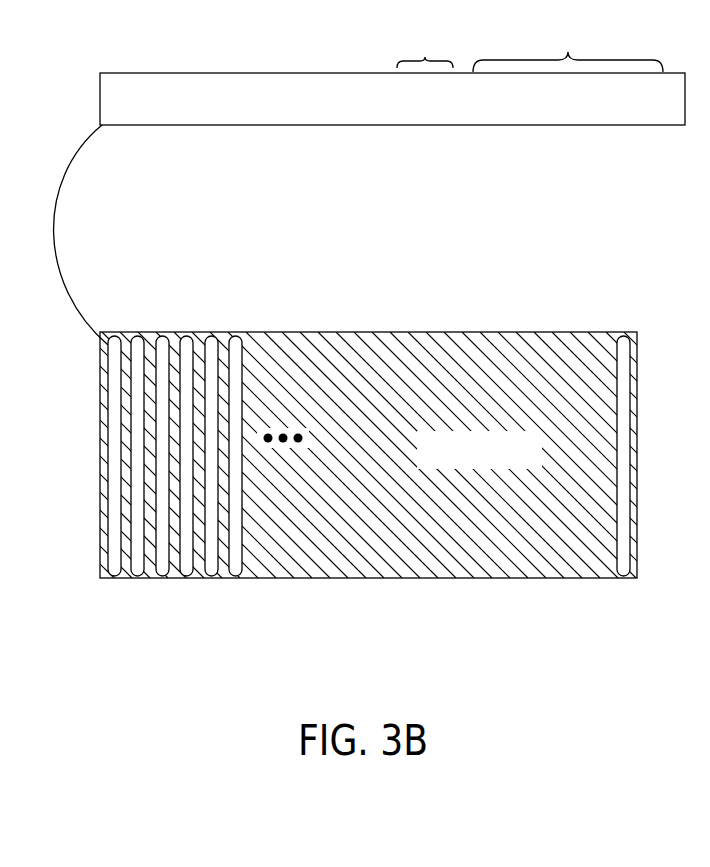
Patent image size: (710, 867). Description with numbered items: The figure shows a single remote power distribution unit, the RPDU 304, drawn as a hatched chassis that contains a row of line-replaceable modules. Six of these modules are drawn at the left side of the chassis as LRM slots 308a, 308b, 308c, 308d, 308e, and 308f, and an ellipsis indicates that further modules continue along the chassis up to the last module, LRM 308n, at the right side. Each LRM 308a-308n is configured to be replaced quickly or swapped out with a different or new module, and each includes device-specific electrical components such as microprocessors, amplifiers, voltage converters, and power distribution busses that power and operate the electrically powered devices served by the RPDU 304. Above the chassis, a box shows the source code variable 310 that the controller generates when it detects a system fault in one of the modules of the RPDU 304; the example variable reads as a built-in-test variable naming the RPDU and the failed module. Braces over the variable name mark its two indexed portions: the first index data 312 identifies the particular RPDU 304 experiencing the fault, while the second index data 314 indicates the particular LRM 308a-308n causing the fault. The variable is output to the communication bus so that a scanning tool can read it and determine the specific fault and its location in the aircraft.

The RPDU 304 is at (442, 316).
The line-replaceable module 308a is at (112, 340).
The line-replaceable module 308b is at (138, 577).
The line-replaceable module 308c is at (165, 342).
The line-replaceable module 308d is at (192, 577).
The line-replaceable module 308e is at (216, 342).
The line-replaceable module 308f is at (239, 577).
The line-replaceable module 308n is at (622, 577).
The source code variable 310 is at (100, 101).
The first index data 312 is at (425, 45).
The second index data 314 is at (568, 42).